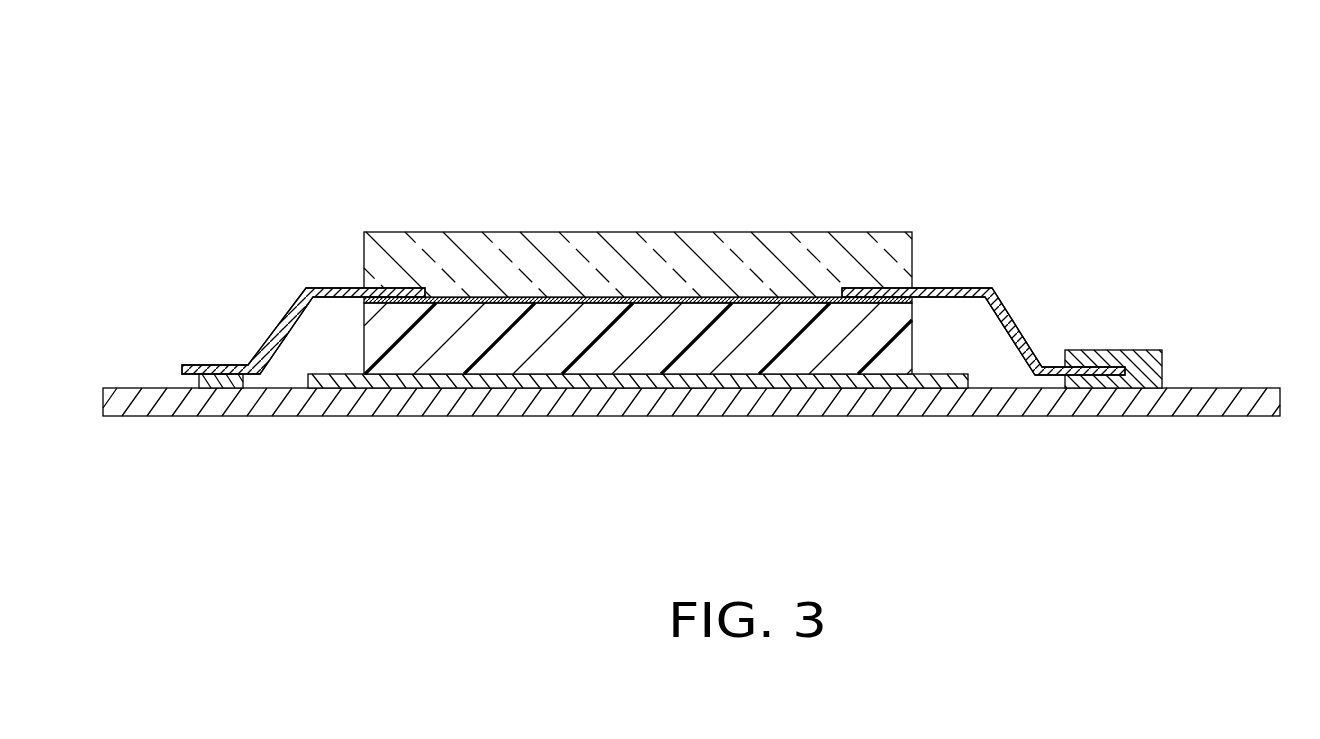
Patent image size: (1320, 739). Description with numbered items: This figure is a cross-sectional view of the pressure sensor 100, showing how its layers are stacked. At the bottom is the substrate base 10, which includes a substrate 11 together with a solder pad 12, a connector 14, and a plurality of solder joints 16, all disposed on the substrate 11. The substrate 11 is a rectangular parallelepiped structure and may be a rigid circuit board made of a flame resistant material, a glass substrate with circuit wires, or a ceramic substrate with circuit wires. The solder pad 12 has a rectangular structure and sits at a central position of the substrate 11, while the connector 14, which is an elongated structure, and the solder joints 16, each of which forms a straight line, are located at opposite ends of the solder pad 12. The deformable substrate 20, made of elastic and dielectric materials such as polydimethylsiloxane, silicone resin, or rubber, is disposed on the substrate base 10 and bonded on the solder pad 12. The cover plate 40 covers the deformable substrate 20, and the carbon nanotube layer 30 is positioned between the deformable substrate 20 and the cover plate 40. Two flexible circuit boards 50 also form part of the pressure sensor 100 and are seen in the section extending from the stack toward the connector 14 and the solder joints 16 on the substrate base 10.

The pressure sensor 100 is at (524, 108).
The substrate base 10 is at (1240, 388).
The substrate 11 is at (1220, 407).
The solder pad 12 is at (828, 378).
The connector 14 is at (1128, 357).
The solder joints 16 is at (223, 376).
The deformable substrate 20 is at (562, 355).
The carbon nanotube layer 30 is at (758, 298).
The cover plate 40 is at (448, 248).
The flexible circuit boards 50 is at (952, 288).